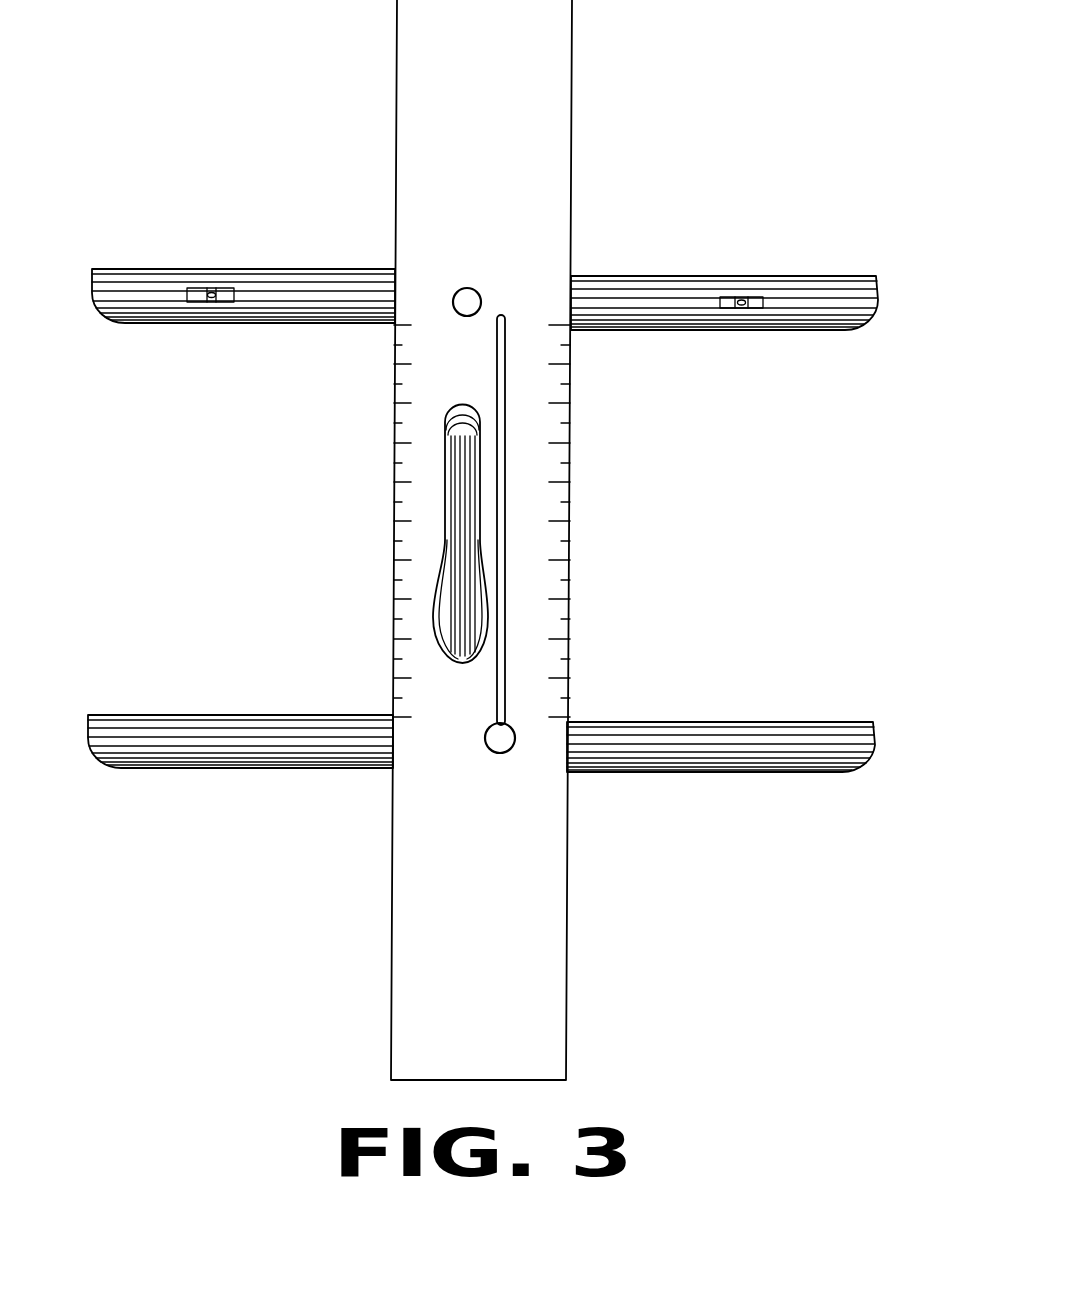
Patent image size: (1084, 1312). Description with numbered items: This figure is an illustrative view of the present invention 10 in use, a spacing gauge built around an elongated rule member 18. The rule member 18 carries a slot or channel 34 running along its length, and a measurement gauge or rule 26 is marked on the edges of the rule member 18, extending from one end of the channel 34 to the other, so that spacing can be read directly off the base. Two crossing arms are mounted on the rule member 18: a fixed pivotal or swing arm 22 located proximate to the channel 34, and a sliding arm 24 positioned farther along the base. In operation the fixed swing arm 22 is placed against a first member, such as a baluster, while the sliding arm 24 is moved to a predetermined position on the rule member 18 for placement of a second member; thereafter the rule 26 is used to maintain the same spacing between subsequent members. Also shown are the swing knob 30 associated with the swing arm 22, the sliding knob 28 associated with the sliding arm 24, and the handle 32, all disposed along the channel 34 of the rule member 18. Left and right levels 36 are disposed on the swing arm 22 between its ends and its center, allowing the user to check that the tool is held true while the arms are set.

The present invention 10 is at (710, 161).
The rule member base 18 is at (548, 1010).
The swing arm 22 is at (341, 272).
The sliding arm 24 is at (281, 770).
The rule 26 is at (558, 523).
The sliding knob 28 is at (500, 762).
The swing knob 30 is at (475, 290).
The handle 32 is at (445, 522).
The channel 34 is at (506, 425).
The level 36 is at (209, 291).